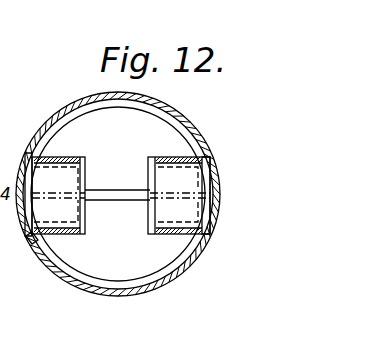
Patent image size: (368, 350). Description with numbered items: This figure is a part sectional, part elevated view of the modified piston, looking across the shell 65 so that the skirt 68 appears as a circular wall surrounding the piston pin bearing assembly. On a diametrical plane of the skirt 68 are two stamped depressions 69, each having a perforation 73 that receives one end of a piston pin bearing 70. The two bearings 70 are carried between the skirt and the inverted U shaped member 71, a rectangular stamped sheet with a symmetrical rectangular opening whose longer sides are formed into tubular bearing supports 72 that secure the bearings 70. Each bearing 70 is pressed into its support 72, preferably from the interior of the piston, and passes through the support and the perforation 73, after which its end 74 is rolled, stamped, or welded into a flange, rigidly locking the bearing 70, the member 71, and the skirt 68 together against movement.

The shell 65 is at (148, 130).
The skirt 68 is at (96, 290).
The stamped depression 69 is at (28, 152).
The piston pin bearing 70 is at (50, 211).
The inverted U shaped member 71 is at (108, 190).
The tubular bearing support 72 is at (60, 235).
The perforation 73 is at (32, 233).
The end 74 is at (212, 204).